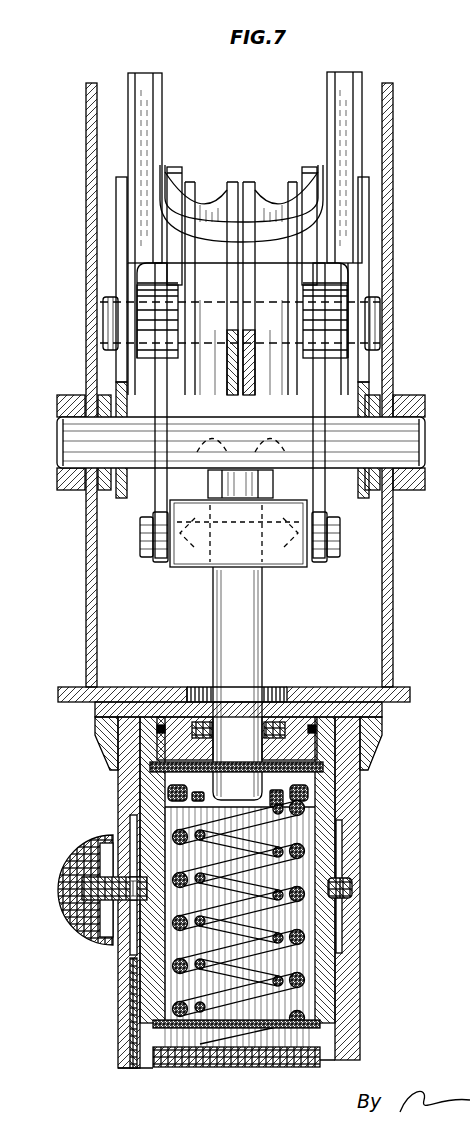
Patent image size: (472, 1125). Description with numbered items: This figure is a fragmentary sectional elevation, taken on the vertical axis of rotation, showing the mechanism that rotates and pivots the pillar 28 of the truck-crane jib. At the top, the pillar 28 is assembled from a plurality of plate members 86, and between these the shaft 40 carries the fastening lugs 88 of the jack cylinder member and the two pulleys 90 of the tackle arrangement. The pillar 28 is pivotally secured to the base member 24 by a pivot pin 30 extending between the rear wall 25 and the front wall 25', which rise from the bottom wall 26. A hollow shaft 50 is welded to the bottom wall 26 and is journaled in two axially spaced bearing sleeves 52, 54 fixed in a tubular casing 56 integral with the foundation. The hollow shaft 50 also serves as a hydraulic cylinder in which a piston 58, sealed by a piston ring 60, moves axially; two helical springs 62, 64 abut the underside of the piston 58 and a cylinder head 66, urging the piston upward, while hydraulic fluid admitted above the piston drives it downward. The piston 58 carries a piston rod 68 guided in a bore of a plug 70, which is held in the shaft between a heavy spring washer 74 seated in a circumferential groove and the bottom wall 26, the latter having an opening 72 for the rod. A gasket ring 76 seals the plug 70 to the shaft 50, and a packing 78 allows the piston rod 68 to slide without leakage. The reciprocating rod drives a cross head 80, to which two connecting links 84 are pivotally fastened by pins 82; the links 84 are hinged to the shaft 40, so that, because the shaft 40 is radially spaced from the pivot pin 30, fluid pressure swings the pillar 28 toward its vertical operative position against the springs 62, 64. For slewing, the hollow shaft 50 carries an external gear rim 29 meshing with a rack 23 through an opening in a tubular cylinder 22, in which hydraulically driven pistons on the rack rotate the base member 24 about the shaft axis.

The tubular cylinder 22 is at (90, 843).
The rack 23 is at (83, 910).
The base member 24 is at (80, 507).
The rear wall 25 is at (406, 385).
The front wall 25' is at (67, 385).
The bottom wall 26 is at (58, 695).
The pillar 28 is at (367, 77).
The gear rim 29 is at (352, 880).
The pivot pin 30 is at (410, 437).
The shaft 40 is at (105, 317).
The hollow shaft 50 is at (143, 980).
The bearing sleeve 52 is at (340, 773).
The bearing sleeve 54 is at (130, 1037).
The tubular casing 56 is at (353, 840).
The piston 58 is at (317, 808).
The piston ring 60 is at (167, 787).
The helical spring 62 is at (280, 957).
The helical spring 64 is at (317, 980).
The cylinder head 66 is at (217, 1067).
The piston rod 68 is at (213, 609).
The plug 70 is at (307, 712).
The opening 72 is at (273, 690).
The spring washer 74 is at (140, 767).
The gasket ring 76 is at (353, 733).
The packing 78 is at (193, 722).
The cross head 80 is at (283, 562).
The pin 82 is at (147, 545).
The connecting link 84 is at (155, 497).
The plate member 86 is at (117, 363).
The fastening lug 88 is at (174, 168).
The pulley 90 is at (254, 185).